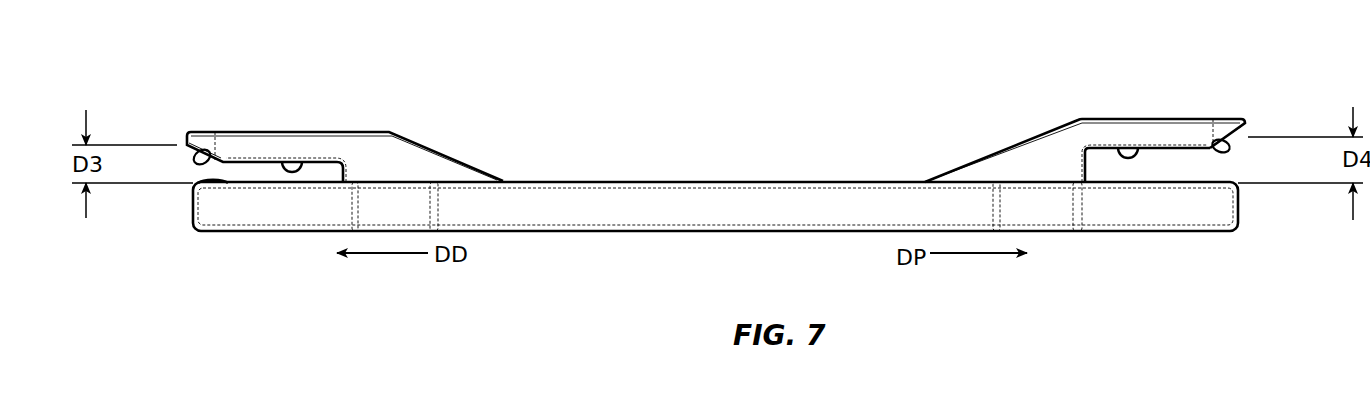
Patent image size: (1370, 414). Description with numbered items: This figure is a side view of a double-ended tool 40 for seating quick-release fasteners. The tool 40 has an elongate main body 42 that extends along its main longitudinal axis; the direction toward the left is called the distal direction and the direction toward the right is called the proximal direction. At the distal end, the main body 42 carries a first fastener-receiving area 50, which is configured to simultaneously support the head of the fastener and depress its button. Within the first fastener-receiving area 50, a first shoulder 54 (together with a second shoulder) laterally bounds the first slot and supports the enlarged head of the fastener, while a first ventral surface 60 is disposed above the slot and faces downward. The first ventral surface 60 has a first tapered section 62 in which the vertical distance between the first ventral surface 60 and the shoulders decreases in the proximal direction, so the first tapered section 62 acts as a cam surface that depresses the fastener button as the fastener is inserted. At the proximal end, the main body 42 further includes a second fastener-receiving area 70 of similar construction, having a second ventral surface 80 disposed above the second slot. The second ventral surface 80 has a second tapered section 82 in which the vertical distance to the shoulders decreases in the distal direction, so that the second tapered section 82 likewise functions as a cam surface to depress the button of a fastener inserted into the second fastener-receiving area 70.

The tool 40 is at (700, 169).
The elongate main body 42 is at (682, 227).
The first fastener-receiving area 50 is at (333, 194).
The first shoulder 54 is at (200, 184).
The first ventral surface 60 is at (305, 165).
The first tapered section 62 is at (212, 162).
The second fastener-receiving area 70 is at (1099, 185).
The second ventral surface 80 is at (1115, 153).
The second tapered section 82 is at (1208, 148).